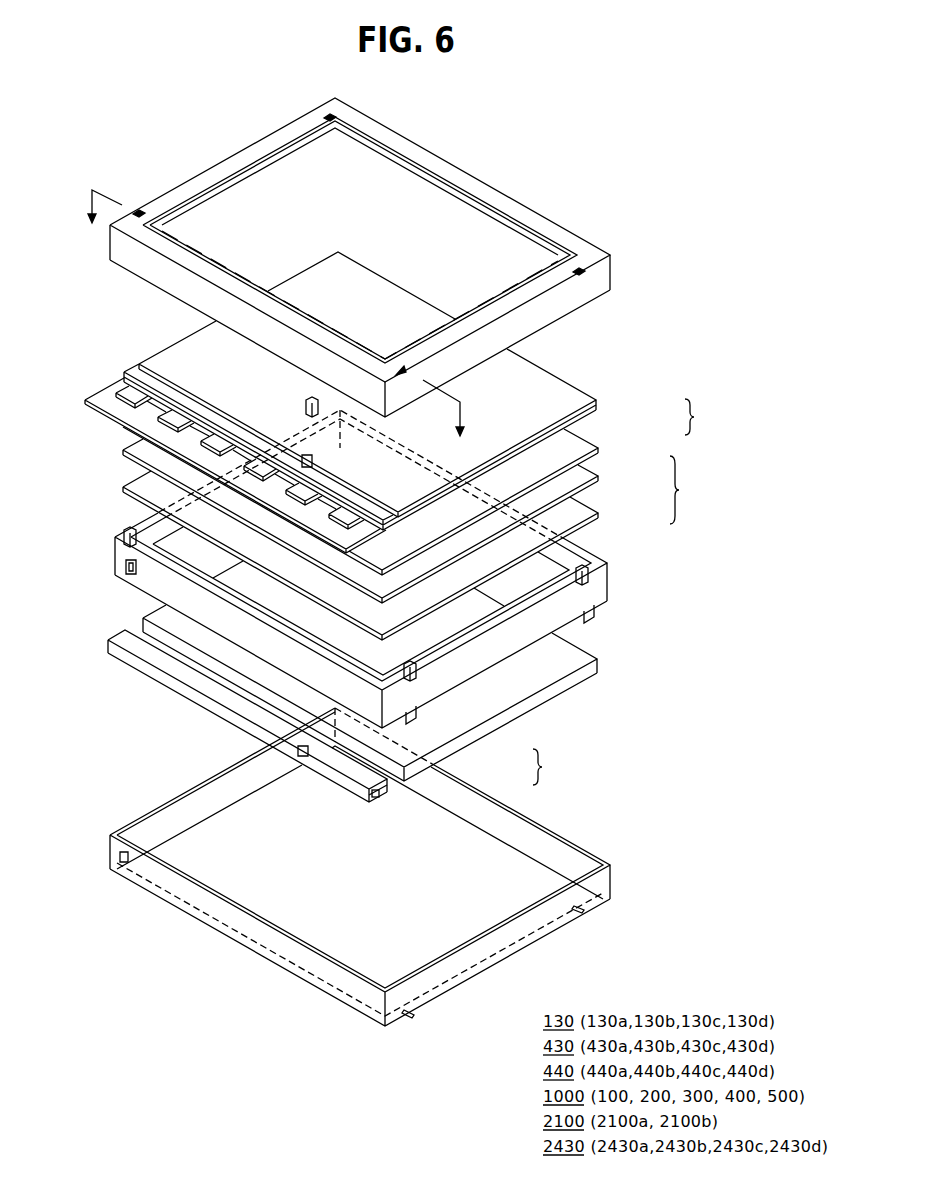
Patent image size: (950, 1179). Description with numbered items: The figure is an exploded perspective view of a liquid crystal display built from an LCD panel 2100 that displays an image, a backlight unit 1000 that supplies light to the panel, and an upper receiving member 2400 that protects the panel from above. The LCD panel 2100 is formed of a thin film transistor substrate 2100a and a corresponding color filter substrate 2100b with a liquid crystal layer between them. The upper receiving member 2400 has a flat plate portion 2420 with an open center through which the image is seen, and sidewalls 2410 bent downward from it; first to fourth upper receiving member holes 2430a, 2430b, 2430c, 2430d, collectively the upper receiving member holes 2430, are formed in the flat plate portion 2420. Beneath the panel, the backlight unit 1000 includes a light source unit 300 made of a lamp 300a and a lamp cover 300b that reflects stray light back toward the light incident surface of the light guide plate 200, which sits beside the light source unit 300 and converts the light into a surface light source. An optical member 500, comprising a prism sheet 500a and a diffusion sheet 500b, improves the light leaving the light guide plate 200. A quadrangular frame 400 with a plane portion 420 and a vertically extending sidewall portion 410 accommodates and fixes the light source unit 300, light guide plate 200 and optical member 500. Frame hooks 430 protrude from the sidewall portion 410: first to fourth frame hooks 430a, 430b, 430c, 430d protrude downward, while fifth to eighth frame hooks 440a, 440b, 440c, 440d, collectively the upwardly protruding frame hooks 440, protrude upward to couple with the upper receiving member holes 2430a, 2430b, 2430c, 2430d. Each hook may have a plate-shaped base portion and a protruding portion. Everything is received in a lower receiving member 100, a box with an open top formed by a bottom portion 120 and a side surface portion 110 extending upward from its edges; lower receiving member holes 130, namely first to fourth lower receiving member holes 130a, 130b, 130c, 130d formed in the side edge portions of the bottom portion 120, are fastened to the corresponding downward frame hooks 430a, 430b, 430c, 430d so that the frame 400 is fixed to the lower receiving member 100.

The lower receiving member 100 is at (356, 871).
The side surface portion 110 is at (585, 866).
The bottom portion 120 is at (516, 858).
The lower receiving member holes 130 is at (358, 881).
The first lower receiving member hole 130a is at (580, 909).
The second lower receiving member hole 130b is at (410, 1014).
The third lower receiving member hole 130c is at (122, 857).
The fourth lower receiving member hole 130d is at (298, 751).
The light guide plate 200 is at (599, 662).
The light source unit 300 is at (343, 716).
The lamp 300a is at (400, 786).
The lamp cover 300b is at (404, 770).
The frame 400 is at (354, 530).
The sidewall portion 410 is at (572, 547).
The plane portion 420 is at (602, 574).
The frame hooks 430 is at (359, 596).
The first frame hook 430a is at (596, 620).
The second frame hook 430b is at (414, 721).
The third frame hook 430c is at (126, 569).
The fourth frame hook 430d is at (303, 463).
The frame hooks 440 is at (354, 518).
The fifth frame hook 440a is at (590, 585).
The sixth frame hook 440b is at (418, 668).
The seventh frame hook 440c is at (128, 528).
The eighth frame hook 440d is at (310, 402).
The optical member 500 is at (419, 533).
The prism sheet 500a is at (600, 449).
The diffusion sheet 500b is at (600, 514).
The backlight unit 1000 is at (376, 679).
The LCD panel 2100 is at (412, 402).
The thin film transistor substrate 2100a is at (598, 410).
The color filter substrate 2100b is at (598, 401).
The upper receiving member 2400 is at (380, 271).
The sidewalls 2410 is at (603, 281).
The flat plate portion 2420 is at (590, 245).
The upper receiving member holes 2430 is at (384, 229).
The first upper receiving member hole 2430a is at (581, 275).
The second upper receiving member hole 2430b is at (403, 371).
The third upper receiving member hole 2430c is at (141, 211).
The fourth upper receiving member hole 2430d is at (322, 117).